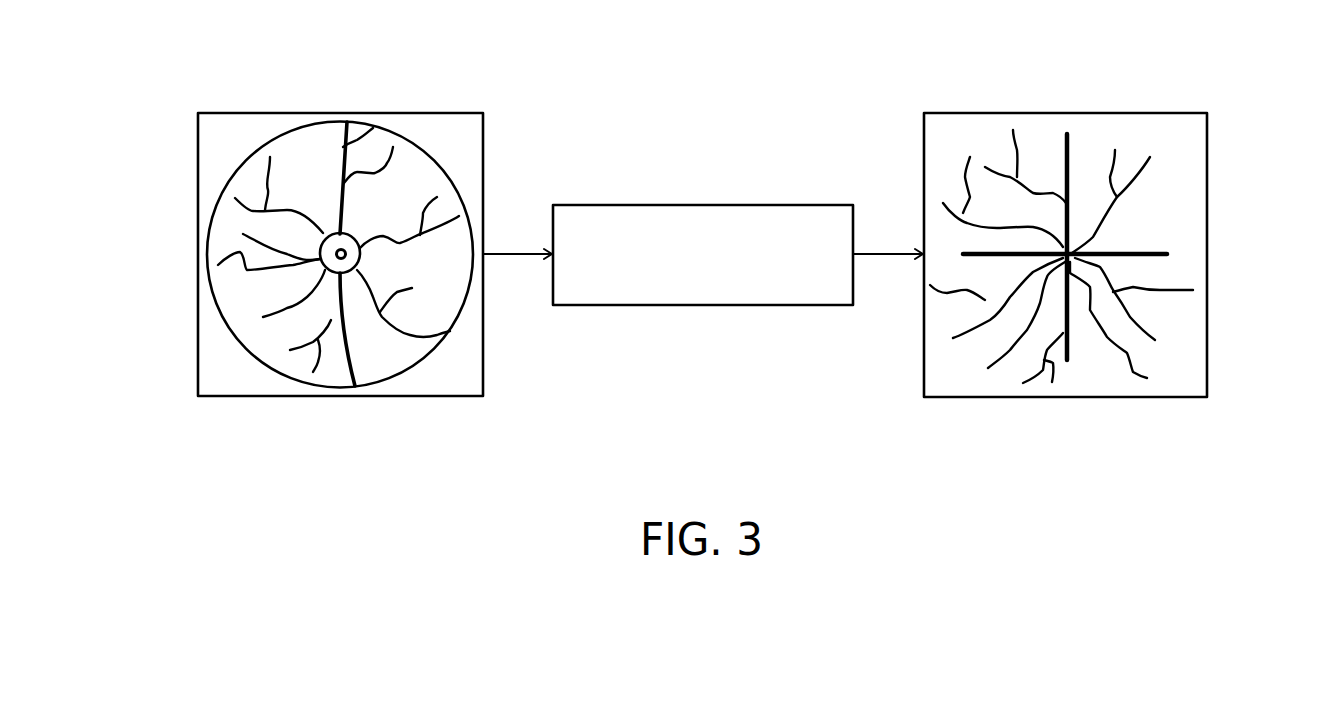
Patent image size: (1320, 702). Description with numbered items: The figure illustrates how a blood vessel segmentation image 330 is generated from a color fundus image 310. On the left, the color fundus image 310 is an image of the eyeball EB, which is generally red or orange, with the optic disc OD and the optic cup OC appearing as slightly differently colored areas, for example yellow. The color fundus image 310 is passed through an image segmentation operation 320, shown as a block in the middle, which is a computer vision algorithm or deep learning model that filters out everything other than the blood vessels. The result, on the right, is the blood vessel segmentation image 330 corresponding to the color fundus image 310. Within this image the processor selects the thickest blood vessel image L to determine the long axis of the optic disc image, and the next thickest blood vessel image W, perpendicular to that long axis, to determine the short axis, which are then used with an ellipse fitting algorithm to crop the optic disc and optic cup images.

The color fundus image 310 is at (197, 147).
The image segmentation operation 320 is at (554, 205).
The blood vessel segmentation image 330 is at (1208, 143).
The optic disc OD is at (327, 235).
The optic cup OC is at (346, 248).
The eyeball EB is at (198, 258).
The thickest blood vessel image L is at (1070, 155).
The next thickest blood vessel image W is at (1140, 253).